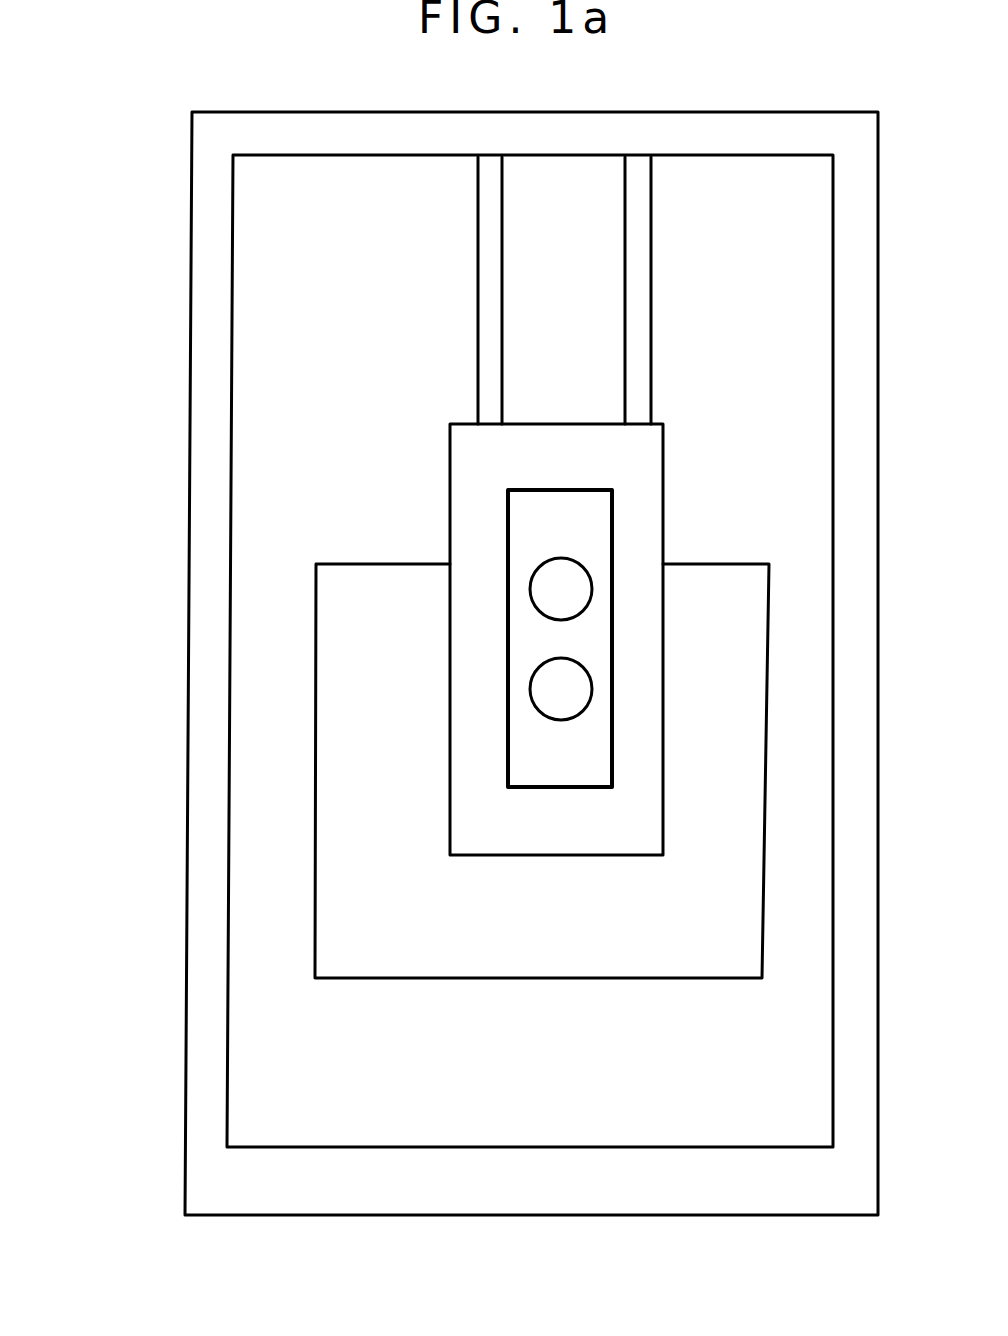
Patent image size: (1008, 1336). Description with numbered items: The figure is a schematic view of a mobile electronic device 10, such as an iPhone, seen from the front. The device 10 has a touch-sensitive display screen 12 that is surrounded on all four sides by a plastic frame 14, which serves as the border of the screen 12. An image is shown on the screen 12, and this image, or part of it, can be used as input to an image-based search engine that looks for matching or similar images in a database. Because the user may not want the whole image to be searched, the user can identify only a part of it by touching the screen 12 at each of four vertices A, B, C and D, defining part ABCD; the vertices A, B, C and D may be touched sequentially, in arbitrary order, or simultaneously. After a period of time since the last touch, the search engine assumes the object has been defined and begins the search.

The mobile electronic device 10 is at (106, 1182).
The touch-sensitive display screen 12 is at (402, 1108).
The plastic frame 14 is at (200, 690).
The vertex A is at (450, 424).
The vertex B is at (663, 424).
The vertex C is at (668, 856).
The vertex D is at (448, 856).